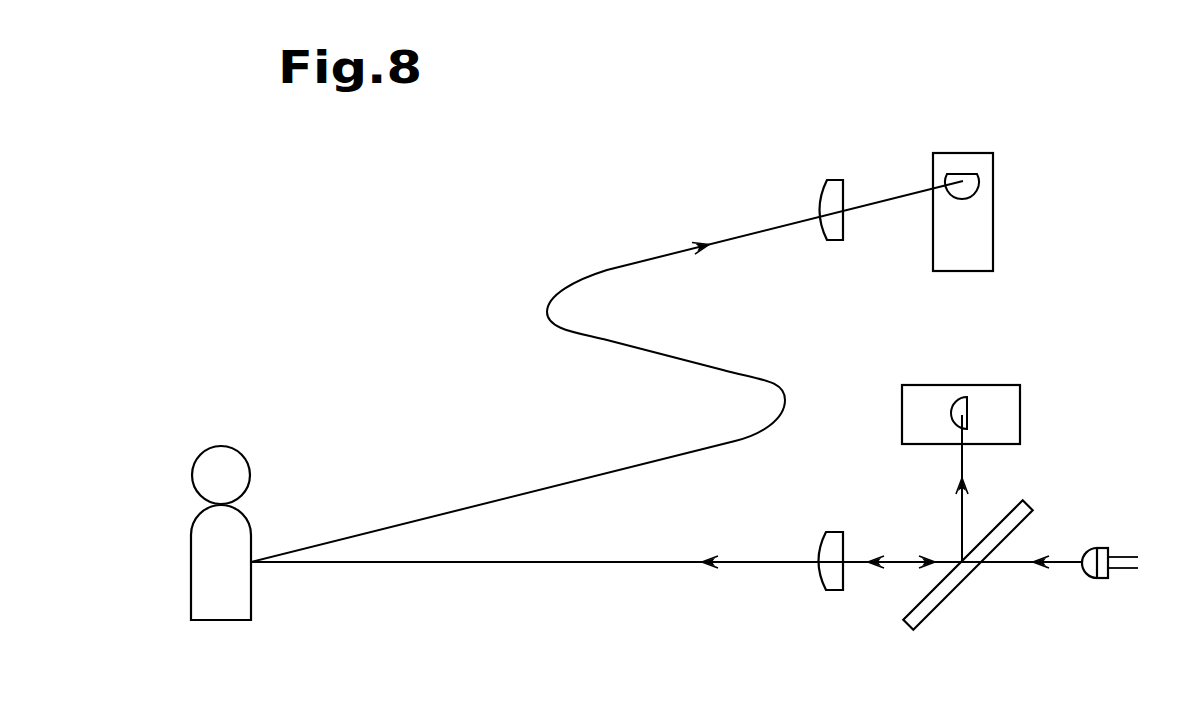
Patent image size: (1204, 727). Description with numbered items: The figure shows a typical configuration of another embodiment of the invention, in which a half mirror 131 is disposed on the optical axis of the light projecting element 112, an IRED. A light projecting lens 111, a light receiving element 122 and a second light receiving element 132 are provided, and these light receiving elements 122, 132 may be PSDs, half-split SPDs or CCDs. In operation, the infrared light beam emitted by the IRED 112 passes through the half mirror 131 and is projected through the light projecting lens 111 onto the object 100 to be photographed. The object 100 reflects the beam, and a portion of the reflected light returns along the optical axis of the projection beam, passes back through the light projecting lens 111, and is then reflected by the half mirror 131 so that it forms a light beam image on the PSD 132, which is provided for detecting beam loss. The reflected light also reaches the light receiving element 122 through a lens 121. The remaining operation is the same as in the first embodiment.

The object 100 is at (246, 428).
The light projecting lens 111 is at (843, 532).
The light projecting element 112 is at (1097, 548).
The receiving lens 121 is at (870, 164).
The light receiving element 122 is at (990, 135).
The half mirror 131 is at (1048, 487).
The light receiving element 132 is at (1020, 368).